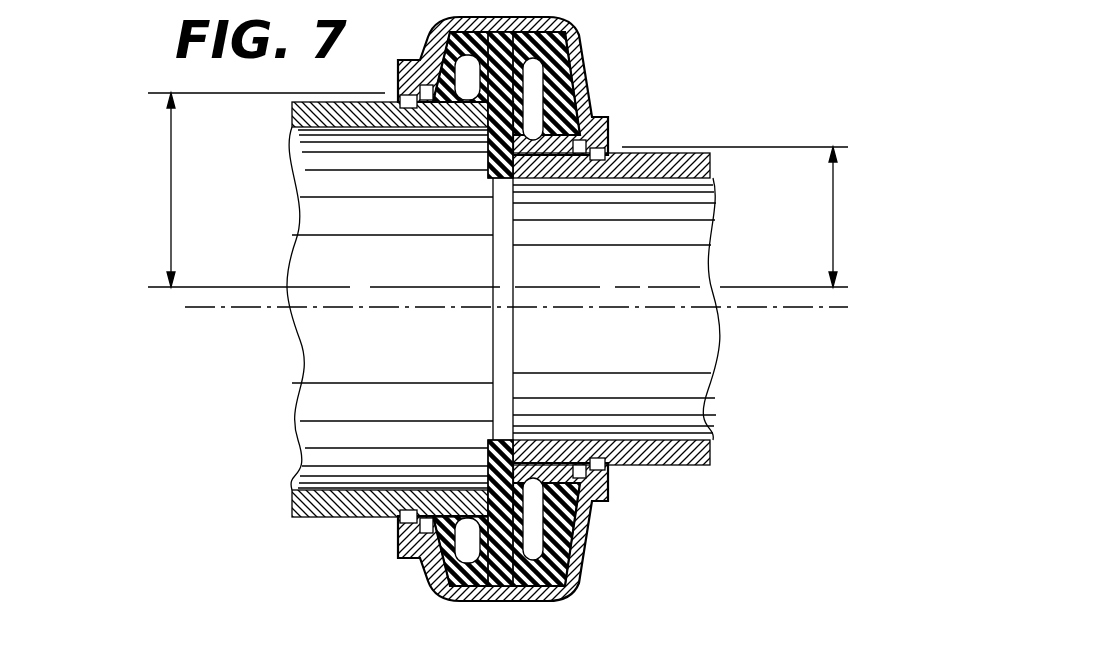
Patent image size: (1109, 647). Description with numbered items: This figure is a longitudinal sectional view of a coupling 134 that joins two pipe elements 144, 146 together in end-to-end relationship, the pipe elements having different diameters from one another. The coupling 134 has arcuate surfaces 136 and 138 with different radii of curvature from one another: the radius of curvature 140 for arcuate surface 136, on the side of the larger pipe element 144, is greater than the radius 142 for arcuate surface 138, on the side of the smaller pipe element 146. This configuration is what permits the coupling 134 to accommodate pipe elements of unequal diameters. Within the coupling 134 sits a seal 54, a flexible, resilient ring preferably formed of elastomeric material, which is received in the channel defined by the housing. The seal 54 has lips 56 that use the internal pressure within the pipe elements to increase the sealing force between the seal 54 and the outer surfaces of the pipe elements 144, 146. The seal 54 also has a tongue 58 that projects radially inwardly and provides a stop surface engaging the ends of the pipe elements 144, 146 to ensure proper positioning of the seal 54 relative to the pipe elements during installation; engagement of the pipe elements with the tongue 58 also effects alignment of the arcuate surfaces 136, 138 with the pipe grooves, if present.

The coupling 134 is at (626, 82).
The seal 54 is at (550, 563).
The lips 56 is at (485, 505).
The tongue 58 is at (487, 477).
The arcuate surface 136 is at (395, 518).
The arcuate surface 138 is at (607, 470).
The radius of curvature 140 is at (171, 182).
The radius 142 is at (834, 218).
The pipe element 144 is at (297, 505).
The pipe element 146 is at (710, 443).